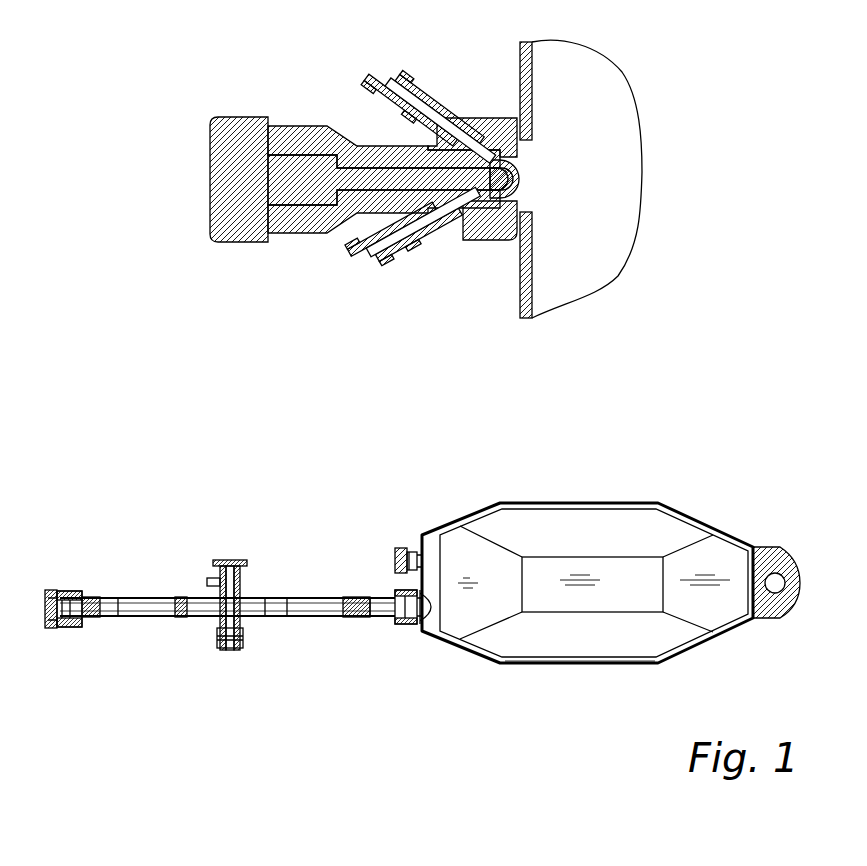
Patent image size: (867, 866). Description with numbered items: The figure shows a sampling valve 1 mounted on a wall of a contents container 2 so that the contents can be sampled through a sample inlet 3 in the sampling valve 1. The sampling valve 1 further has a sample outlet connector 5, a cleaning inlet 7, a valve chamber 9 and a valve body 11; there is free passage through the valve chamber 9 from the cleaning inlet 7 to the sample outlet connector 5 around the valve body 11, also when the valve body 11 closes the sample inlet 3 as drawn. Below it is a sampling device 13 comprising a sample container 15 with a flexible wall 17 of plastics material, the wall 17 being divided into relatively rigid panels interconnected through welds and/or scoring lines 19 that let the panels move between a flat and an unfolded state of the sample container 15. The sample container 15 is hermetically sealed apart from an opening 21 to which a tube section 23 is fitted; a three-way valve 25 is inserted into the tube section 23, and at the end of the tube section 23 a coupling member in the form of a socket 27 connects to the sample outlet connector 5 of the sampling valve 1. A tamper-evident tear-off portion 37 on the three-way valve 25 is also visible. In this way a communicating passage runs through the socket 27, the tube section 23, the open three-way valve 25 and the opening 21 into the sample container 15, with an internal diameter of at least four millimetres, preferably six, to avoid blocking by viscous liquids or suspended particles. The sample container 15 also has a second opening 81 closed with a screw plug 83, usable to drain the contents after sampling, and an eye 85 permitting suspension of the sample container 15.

The sampling valve 1 is at (40, 606).
The contents container 2 is at (520, 81).
The sample inlet 3 is at (520, 178).
The sample outlet connector 5 is at (397, 290).
The cleaning inlet 7 is at (382, 88).
The valve chamber 9 is at (462, 212).
The valve body 11 is at (516, 234).
The sampling device 13 is at (650, 466).
The sample container 15 is at (711, 510).
The flexible wall 17 is at (647, 648).
The welds and/or scoring lines 19 is at (486, 658).
The opening 21 is at (406, 626).
The tube section 23 is at (152, 598).
The three-way valve 25 is at (252, 558).
The socket 27 is at (80, 580).
The tear-off portion 37 is at (216, 583).
The second opening 81 is at (413, 551).
The screw plug 83 is at (396, 556).
The eye 85 is at (775, 572).